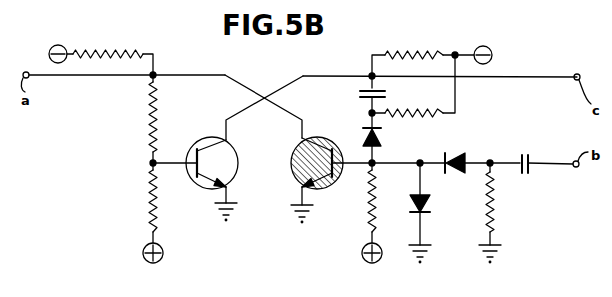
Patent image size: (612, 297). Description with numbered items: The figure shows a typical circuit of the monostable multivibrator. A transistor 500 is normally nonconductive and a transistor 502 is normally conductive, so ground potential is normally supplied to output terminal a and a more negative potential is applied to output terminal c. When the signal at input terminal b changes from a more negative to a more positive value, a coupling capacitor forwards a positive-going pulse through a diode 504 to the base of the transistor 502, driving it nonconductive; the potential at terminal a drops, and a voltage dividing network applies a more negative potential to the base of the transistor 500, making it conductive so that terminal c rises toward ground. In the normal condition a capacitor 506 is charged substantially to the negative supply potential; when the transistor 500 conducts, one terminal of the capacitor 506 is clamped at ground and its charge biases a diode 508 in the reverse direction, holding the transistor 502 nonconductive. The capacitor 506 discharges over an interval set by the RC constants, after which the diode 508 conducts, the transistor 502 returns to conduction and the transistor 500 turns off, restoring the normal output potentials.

The transistor 500 is at (191, 147).
The transistor 502 is at (292, 159).
The diode 504 is at (450, 153).
The capacitor 506 is at (368, 88).
The diode 508 is at (366, 138).